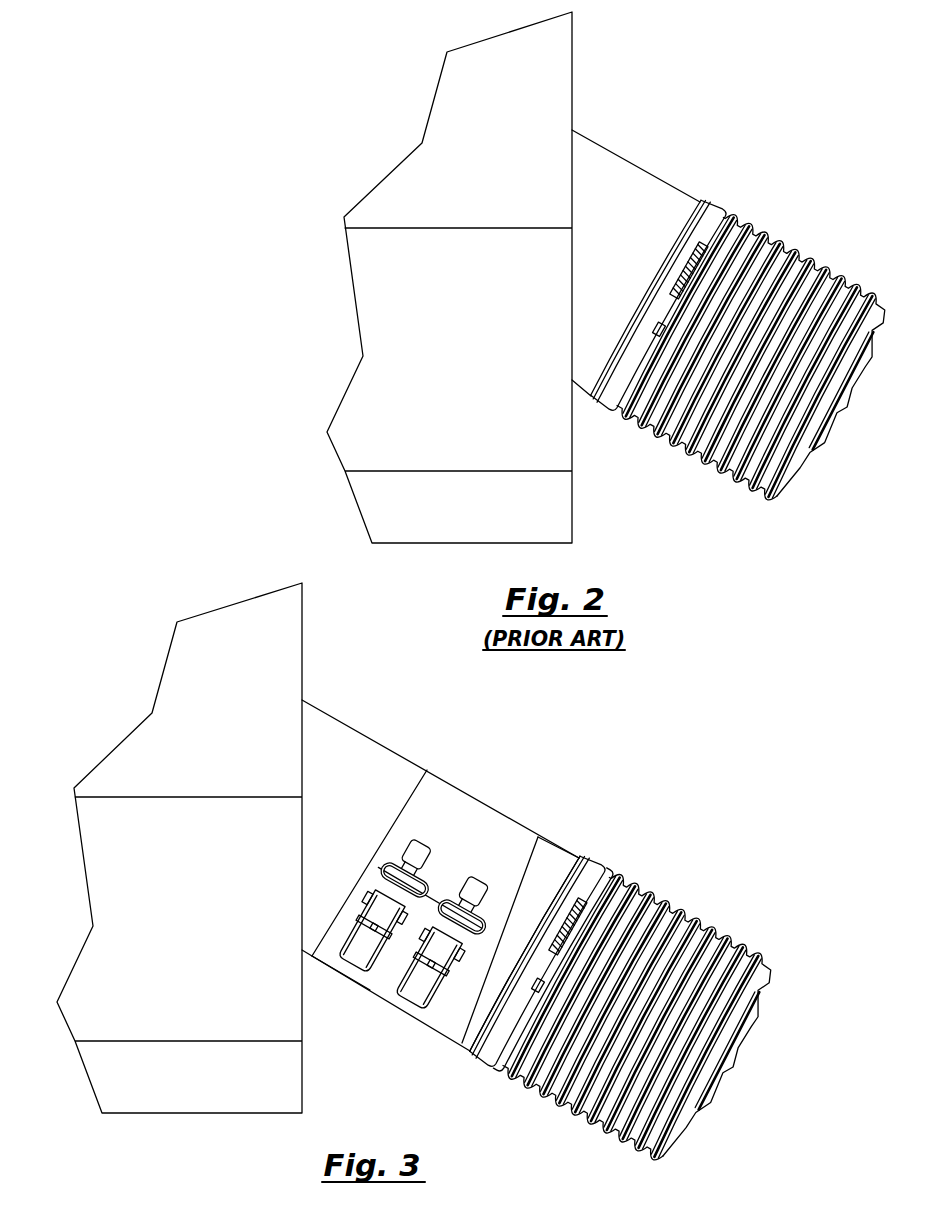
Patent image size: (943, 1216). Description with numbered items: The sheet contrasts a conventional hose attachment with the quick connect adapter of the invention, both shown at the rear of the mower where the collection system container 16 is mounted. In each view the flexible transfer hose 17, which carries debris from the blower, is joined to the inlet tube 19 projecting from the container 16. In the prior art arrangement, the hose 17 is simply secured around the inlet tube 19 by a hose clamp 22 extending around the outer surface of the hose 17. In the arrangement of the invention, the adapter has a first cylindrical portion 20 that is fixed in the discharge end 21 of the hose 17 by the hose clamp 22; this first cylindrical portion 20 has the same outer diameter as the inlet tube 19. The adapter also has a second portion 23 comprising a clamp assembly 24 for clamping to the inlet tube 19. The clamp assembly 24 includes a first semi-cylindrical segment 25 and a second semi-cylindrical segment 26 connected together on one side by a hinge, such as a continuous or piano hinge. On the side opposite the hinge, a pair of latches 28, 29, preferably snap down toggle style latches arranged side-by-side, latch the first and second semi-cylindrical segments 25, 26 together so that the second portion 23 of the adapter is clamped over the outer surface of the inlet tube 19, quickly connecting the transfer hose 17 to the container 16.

In FIG. 2, the container 16 is at (460, 142).
In FIG. 3, the container 16 is at (183, 667).
In FIG. 2, the flexible transfer hose 17 is at (793, 247).
In FIG. 3, the flexible transfer hose 17 is at (700, 920).
In FIG. 2, the inlet tube 19 is at (612, 170).
In FIG. 3, the inlet tube 19 is at (348, 737).
In FIG. 3, the first cylindrical portion 20 is at (574, 866).
In FIG. 3, the discharge end 21 is at (640, 887).
In FIG. 2, the hose clamp 22 is at (718, 200).
In FIG. 3, the hose clamp 22 is at (605, 870).
In FIG. 3, the second portion 23 is at (547, 852).
In FIG. 3, the clamp assembly 24 is at (467, 817).
In FIG. 3, the first semi-cylindrical segment 25 is at (443, 1012).
In FIG. 3, the second semi-cylindrical segment 26 is at (440, 800).
In FIG. 3, the latch 28 is at (357, 955).
In FIG. 3, the latch 29 is at (413, 978).